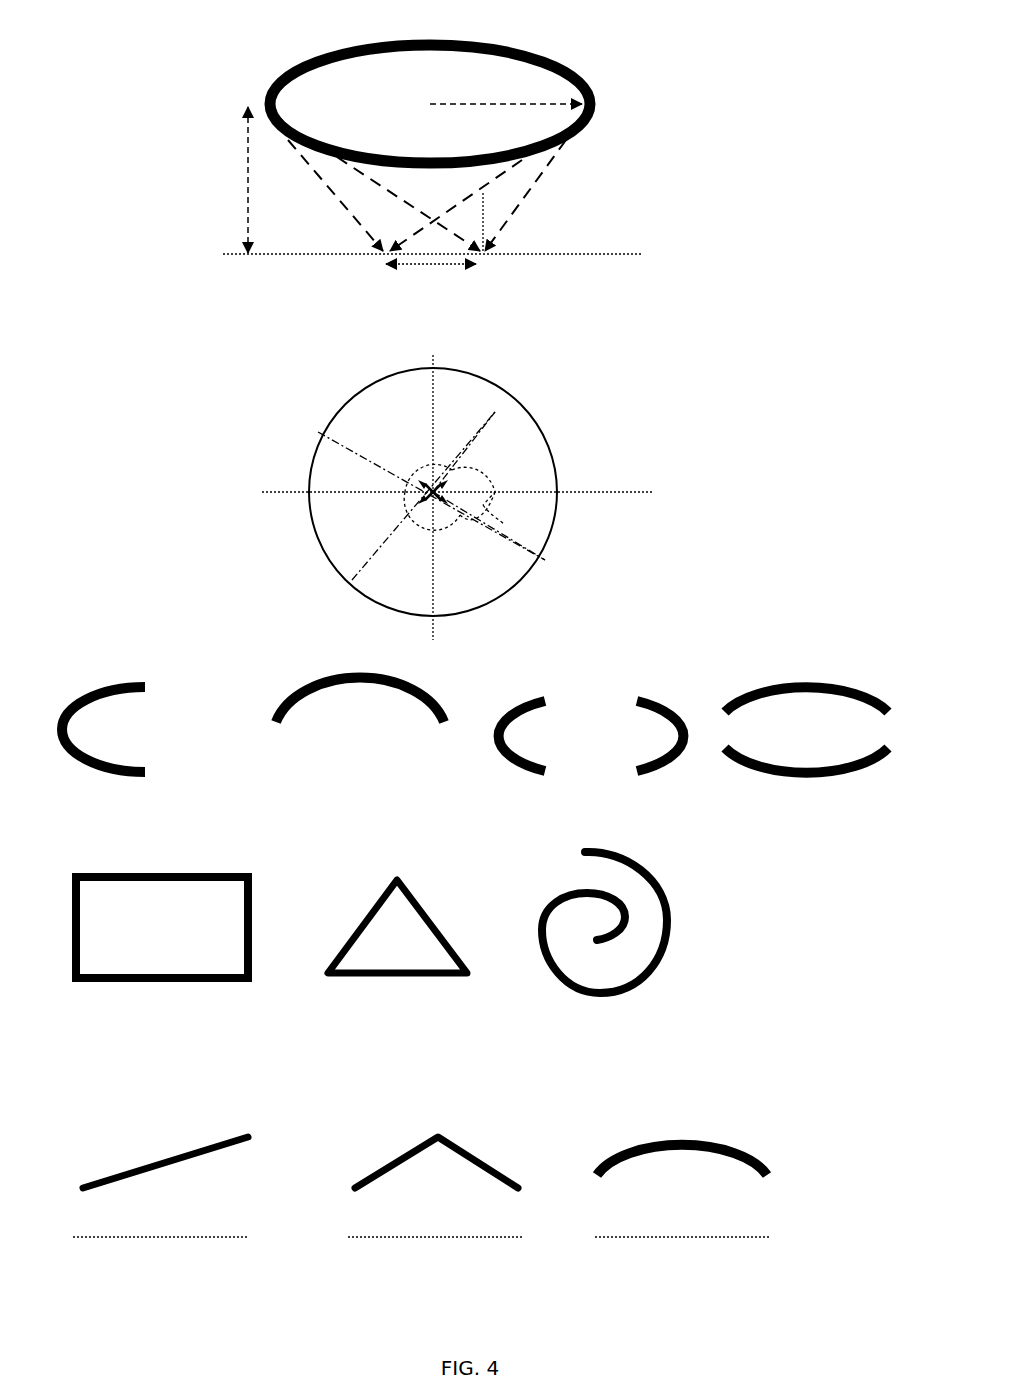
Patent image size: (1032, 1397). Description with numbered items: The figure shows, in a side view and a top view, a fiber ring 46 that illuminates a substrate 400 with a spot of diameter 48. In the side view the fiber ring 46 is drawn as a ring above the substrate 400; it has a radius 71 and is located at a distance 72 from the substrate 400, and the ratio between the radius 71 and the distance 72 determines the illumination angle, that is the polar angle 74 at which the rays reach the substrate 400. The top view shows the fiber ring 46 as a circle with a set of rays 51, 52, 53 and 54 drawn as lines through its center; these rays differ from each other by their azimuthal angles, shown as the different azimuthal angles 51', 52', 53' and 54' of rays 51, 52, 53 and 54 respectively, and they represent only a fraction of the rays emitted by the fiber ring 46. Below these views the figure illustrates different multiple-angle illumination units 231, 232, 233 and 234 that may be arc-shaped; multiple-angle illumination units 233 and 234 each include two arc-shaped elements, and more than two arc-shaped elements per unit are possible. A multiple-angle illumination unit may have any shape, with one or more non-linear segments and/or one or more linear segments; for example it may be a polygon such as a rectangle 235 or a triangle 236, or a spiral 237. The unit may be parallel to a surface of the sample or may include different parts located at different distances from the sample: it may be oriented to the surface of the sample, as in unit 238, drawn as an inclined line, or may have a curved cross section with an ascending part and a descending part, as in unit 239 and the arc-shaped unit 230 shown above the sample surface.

The fiber ring 46 is at (517, 50).
The radius 71 is at (470, 100).
The distance 72 is at (246, 180).
The illumination angle 74 is at (505, 213).
The substrate 400 is at (612, 253).
The spot diameter 48 is at (431, 281).
The ray 51 is at (493, 424).
The azimuthal angle 51' is at (532, 472).
The ray 52 is at (494, 553).
The azimuthal angle 52' is at (540, 523).
The ray 53 is at (388, 496).
The azimuthal angle 53' is at (432, 535).
The ray 54 is at (407, 490).
The azimuthal angle 54' is at (422, 458).
The arc light pattern 230 is at (600, 1162).
The multiple-angle illumination unit 231 is at (100, 778).
The multiple-angle illumination unit 232 is at (288, 742).
The multiple-angle illumination unit 233 is at (540, 788).
The multiple-angle illumination unit 234 is at (730, 778).
The rectangle 235 is at (160, 988).
The triangular light pattern 236 is at (338, 988).
The spiral 237 is at (552, 983).
The multiple-angle illumination unit 238 is at (208, 1168).
The multiple-angle illumination unit 239 is at (368, 1190).